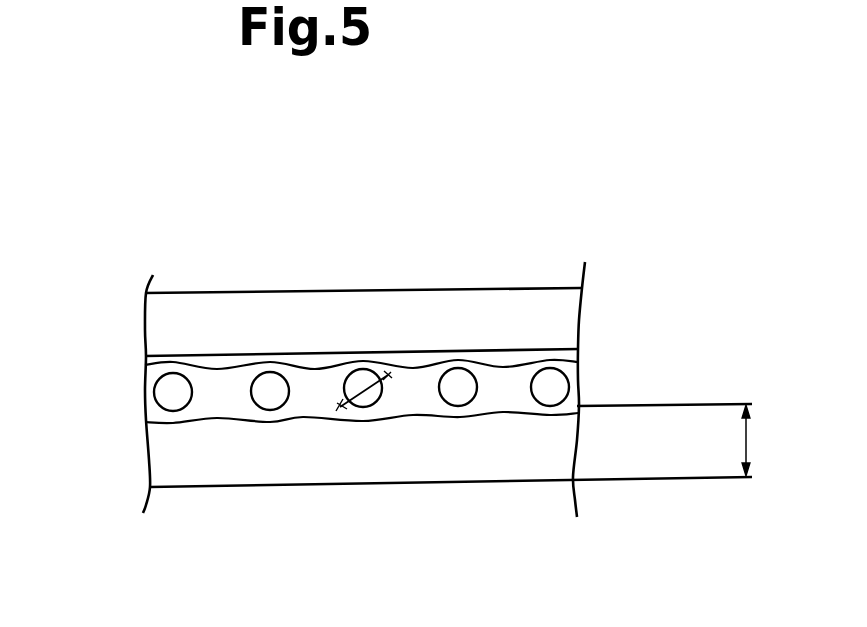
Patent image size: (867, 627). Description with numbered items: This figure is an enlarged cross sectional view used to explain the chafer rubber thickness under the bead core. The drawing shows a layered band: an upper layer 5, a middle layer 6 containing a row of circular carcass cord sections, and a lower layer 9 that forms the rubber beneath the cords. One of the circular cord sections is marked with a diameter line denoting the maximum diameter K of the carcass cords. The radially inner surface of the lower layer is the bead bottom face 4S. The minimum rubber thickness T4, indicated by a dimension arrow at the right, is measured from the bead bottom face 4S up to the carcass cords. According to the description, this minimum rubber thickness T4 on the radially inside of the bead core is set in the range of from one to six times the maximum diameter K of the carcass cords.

The upper layer 5 is at (563, 312).
The intermediate layer with fibers 6 is at (130, 397).
The lower layer 9 is at (167, 455).
The maximum diameter of the carcass cords K is at (361, 378).
The bead bottom face 4S is at (398, 482).
The minimum rubber thickness T4 is at (748, 442).